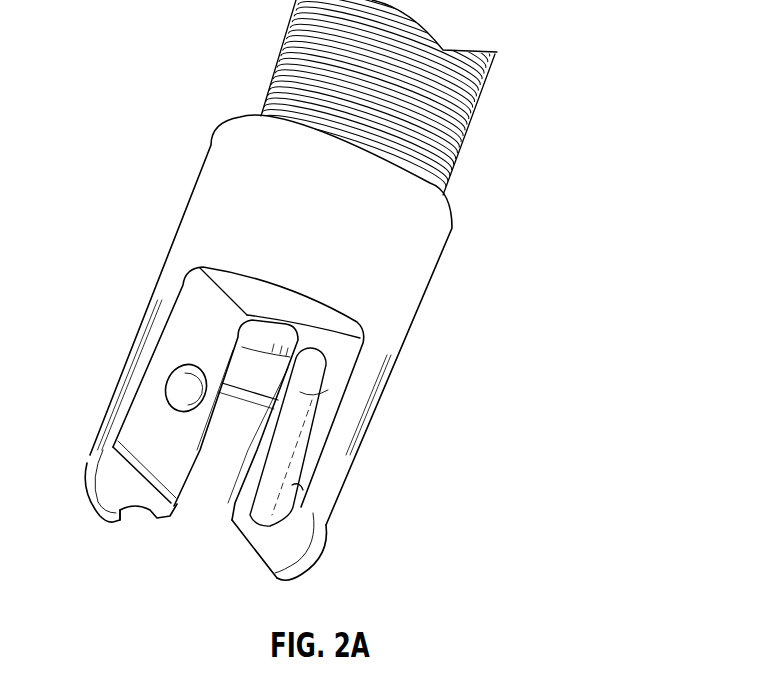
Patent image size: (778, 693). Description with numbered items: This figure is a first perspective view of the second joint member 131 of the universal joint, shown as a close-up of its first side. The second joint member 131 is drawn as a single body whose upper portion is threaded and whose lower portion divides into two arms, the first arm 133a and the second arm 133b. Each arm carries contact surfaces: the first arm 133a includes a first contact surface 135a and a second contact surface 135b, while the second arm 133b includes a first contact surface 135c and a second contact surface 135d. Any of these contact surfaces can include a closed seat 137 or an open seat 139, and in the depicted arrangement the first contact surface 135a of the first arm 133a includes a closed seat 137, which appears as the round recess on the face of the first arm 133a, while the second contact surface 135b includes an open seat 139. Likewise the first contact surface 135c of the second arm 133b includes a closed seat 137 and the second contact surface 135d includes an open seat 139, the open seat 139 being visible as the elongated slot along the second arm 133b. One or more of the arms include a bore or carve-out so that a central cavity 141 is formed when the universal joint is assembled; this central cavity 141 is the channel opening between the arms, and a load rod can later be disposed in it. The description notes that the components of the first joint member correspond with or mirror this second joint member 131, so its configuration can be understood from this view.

The second joint member 131 is at (220, 166).
The first arm 133a is at (160, 310).
The second arm 133b is at (378, 350).
The first contact surface 135a is at (140, 431).
The second contact surface 135b is at (125, 528).
The first contact surface 135c is at (255, 574).
The second contact surface 135d is at (303, 490).
The closed seat 137 is at (181, 381).
The open seat 139 is at (277, 478).
The central cavity 141 is at (208, 516).